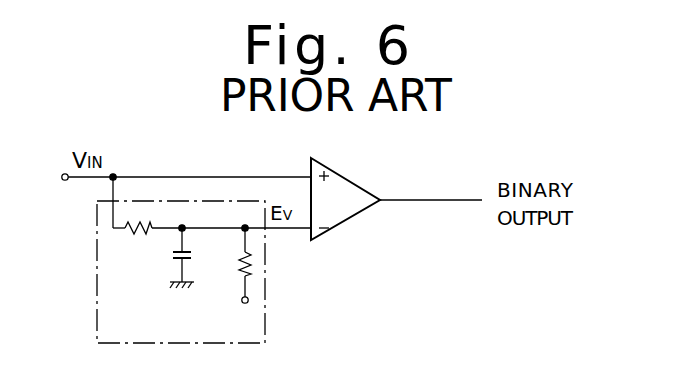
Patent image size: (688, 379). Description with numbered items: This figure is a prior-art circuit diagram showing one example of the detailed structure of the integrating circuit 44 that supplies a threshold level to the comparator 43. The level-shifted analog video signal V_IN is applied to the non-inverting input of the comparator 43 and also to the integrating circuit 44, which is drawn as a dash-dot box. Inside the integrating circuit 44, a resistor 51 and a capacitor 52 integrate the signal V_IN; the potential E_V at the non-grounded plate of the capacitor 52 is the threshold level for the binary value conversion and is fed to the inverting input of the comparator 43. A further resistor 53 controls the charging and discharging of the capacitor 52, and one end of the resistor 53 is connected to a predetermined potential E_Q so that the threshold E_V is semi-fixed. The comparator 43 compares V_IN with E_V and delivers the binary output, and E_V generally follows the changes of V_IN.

The comparator 43 is at (352, 182).
The integrating circuit 44 is at (272, 292).
The resistor 51 is at (139, 231).
The capacitor 52 is at (172, 255).
The resistor 53 is at (236, 258).